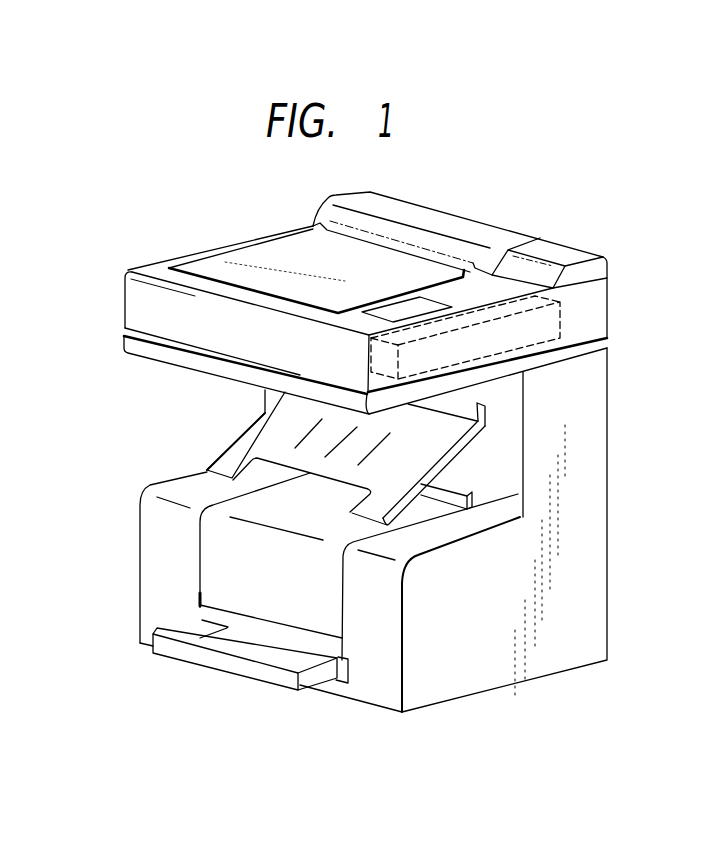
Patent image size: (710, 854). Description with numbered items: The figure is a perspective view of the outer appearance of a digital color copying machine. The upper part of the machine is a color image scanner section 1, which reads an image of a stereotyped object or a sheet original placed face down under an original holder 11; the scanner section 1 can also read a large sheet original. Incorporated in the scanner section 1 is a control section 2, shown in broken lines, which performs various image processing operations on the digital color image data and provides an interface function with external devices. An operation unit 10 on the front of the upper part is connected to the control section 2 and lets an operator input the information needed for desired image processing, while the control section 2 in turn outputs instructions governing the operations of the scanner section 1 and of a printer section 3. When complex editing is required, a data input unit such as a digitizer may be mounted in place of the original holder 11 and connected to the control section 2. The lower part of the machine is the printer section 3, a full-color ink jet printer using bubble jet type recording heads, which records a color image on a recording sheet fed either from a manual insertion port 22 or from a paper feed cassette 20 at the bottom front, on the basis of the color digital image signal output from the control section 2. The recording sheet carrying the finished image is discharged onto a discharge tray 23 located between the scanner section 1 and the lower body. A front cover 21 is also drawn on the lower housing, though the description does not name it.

The color image scanner section 1 is at (608, 305).
The control section 2 is at (560, 323).
The printer section 3 is at (608, 470).
The operation unit 10 is at (340, 347).
The original holder 11 is at (228, 252).
The paper feed cassette 20 is at (212, 672).
The front cover 21 is at (280, 567).
The manual insertion port 22 is at (450, 485).
The discharge tray 23 is at (228, 446).